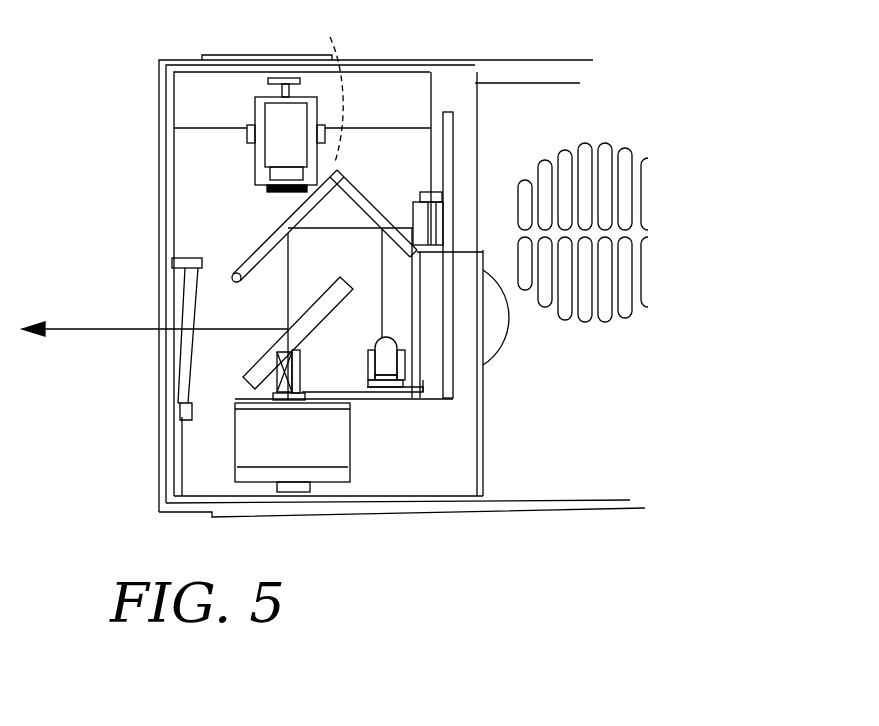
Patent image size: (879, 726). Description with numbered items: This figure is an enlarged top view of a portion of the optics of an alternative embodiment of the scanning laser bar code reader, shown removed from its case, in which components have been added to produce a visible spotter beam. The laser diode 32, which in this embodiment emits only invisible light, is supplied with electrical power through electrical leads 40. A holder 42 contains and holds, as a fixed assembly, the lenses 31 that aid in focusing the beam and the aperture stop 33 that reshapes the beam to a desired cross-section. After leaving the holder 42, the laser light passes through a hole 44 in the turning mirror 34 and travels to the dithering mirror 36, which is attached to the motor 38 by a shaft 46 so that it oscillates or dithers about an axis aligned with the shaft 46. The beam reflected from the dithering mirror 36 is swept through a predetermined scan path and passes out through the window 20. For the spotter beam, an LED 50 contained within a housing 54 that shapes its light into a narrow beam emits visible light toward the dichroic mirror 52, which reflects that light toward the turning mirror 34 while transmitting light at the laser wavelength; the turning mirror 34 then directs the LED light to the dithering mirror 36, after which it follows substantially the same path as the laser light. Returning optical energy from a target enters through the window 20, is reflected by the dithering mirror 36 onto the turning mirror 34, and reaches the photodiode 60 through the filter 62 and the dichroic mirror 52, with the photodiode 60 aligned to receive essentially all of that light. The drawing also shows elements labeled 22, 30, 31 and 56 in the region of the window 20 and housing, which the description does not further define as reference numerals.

The window 20 is at (187, 306).
The light output direction arrow 22 is at (66, 332).
The housing 30 is at (168, 478).
The lenses 31 is at (265, 190).
The laser diode 32 is at (265, 172).
The aperture stop 33 is at (265, 190).
The turning mirror 34 is at (233, 270).
The dithering mirror 36 is at (318, 303).
The motor 38 is at (293, 457).
The electrical leads 40 is at (273, 119).
The holder 42 is at (250, 135).
The hole 44 is at (331, 89).
The shaft 46 is at (302, 374).
The LED 50 is at (378, 372).
The dichroic mirror 52 is at (412, 228).
The housing 54 is at (405, 368).
The lamp bulb 56 is at (384, 330).
The photodiode 60 is at (415, 247).
The filter 62 is at (452, 230).